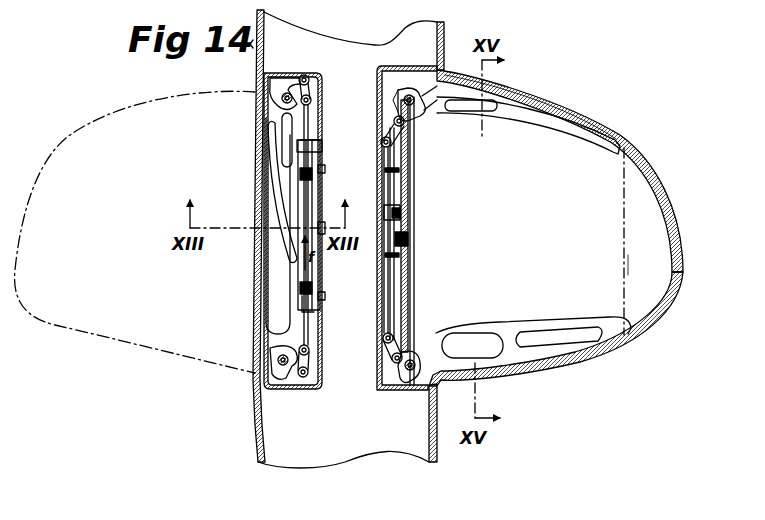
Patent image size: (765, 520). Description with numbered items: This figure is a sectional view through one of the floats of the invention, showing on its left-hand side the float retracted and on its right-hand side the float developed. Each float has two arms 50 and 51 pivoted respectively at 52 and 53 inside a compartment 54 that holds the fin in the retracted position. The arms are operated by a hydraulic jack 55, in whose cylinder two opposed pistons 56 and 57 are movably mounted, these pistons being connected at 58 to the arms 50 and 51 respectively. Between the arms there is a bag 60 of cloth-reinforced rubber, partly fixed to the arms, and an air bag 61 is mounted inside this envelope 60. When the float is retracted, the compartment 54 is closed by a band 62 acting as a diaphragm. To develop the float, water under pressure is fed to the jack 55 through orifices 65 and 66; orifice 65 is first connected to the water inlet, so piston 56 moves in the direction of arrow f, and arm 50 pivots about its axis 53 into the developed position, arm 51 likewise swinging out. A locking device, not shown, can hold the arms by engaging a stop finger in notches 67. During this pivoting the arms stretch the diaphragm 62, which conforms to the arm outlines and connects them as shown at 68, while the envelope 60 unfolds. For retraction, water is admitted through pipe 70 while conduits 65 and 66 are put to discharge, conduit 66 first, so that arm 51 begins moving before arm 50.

The arm 50 is at (258, 279).
The arm 51 is at (263, 143).
The pivot 52 is at (283, 98).
The pivot 53 is at (262, 372).
The compartment 54 is at (318, 74).
The hydraulic jack 55 is at (403, 180).
The piston 56 is at (312, 284).
The piston 57 is at (318, 178).
The connection 58 is at (309, 82).
The bag 60 is at (264, 128).
The air bag 61 is at (639, 265).
The band 62 is at (257, 74).
The orifice 65 is at (334, 300).
The orifice 66 is at (325, 170).
The notch 67 is at (413, 93).
The connection of diaphragm 68 is at (621, 227).
The pipe 70 is at (386, 232).